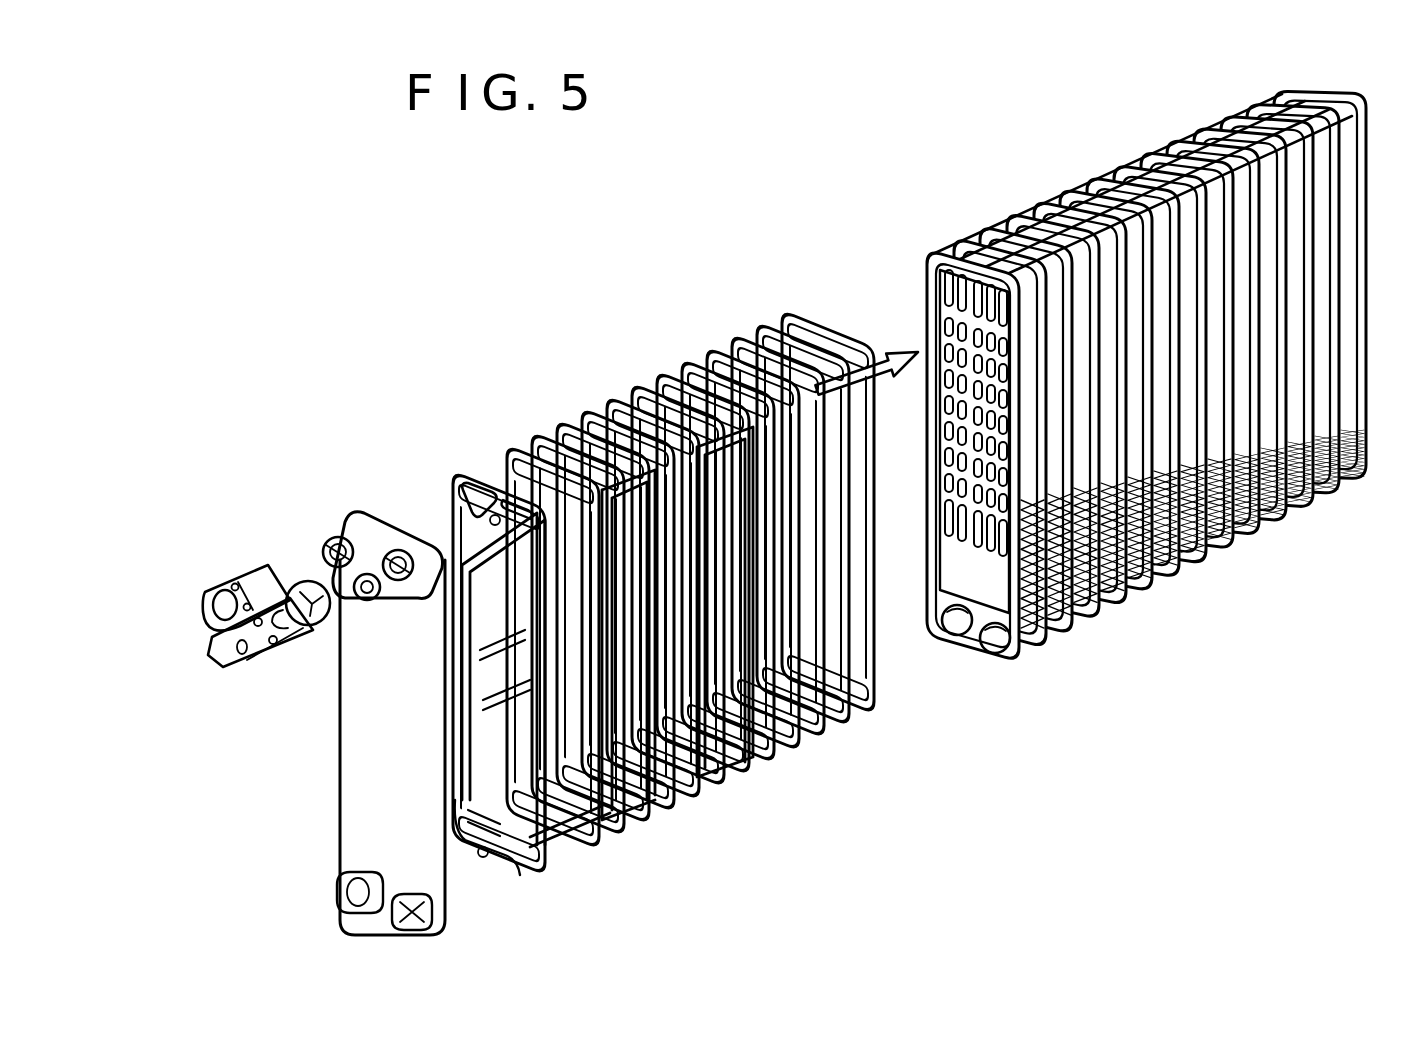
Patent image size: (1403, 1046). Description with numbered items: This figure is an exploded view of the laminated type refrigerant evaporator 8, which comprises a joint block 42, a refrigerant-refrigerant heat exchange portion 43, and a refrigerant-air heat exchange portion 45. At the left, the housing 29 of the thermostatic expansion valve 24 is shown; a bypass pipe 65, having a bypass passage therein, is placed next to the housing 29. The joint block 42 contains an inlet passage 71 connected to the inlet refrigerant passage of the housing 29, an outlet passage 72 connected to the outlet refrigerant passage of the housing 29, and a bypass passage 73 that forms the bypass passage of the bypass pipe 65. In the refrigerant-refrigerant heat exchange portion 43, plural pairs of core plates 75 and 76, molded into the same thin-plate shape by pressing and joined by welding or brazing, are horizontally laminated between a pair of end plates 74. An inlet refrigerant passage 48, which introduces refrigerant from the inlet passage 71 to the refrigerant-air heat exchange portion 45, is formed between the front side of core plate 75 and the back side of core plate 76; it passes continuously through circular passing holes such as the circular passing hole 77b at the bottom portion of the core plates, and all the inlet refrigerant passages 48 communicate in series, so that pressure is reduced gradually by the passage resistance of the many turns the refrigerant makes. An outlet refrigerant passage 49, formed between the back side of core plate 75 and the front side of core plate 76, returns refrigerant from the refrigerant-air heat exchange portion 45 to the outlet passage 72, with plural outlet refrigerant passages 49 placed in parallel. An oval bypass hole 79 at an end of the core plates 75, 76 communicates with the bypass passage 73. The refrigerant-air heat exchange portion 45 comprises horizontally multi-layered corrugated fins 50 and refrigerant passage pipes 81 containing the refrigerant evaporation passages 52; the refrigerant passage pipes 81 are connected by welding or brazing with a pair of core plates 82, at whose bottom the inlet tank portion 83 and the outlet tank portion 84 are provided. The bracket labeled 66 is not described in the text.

The laminated type refrigerant evaporator 8 is at (603, 597).
The thermostatic expansion valve 24 is at (240, 636).
The housing 29 is at (220, 665).
The joint block 42 is at (353, 512).
The refrigerant-refrigerant heat exchange portion 43 is at (807, 290).
The refrigerant-air heat exchange portion 45 is at (1126, 395).
The inlet refrigerant passage 48 is at (468, 850).
The outlet refrigerant passage 49 is at (553, 500).
The corrugated fins 50 is at (1127, 600).
The refrigerant evaporation passages 52 is at (955, 482).
The bypass pipe 65 is at (207, 603).
The pipe joint 66 is at (263, 577).
The inlet passage 71 is at (330, 627).
The outlet passage 72 is at (393, 547).
The bypass passage 73 is at (333, 550).
The end plates 74 is at (360, 768).
The core plate 75 is at (458, 462).
The core plate 76 is at (506, 440).
The circular passing hole 77b is at (553, 877).
The oval bypass hole 79 is at (438, 455).
The refrigerant passage pipes 81 is at (990, 217).
The core plates 82 is at (927, 263).
The inlet tank portion 83 is at (990, 657).
The outlet tank portion 84 is at (938, 635).